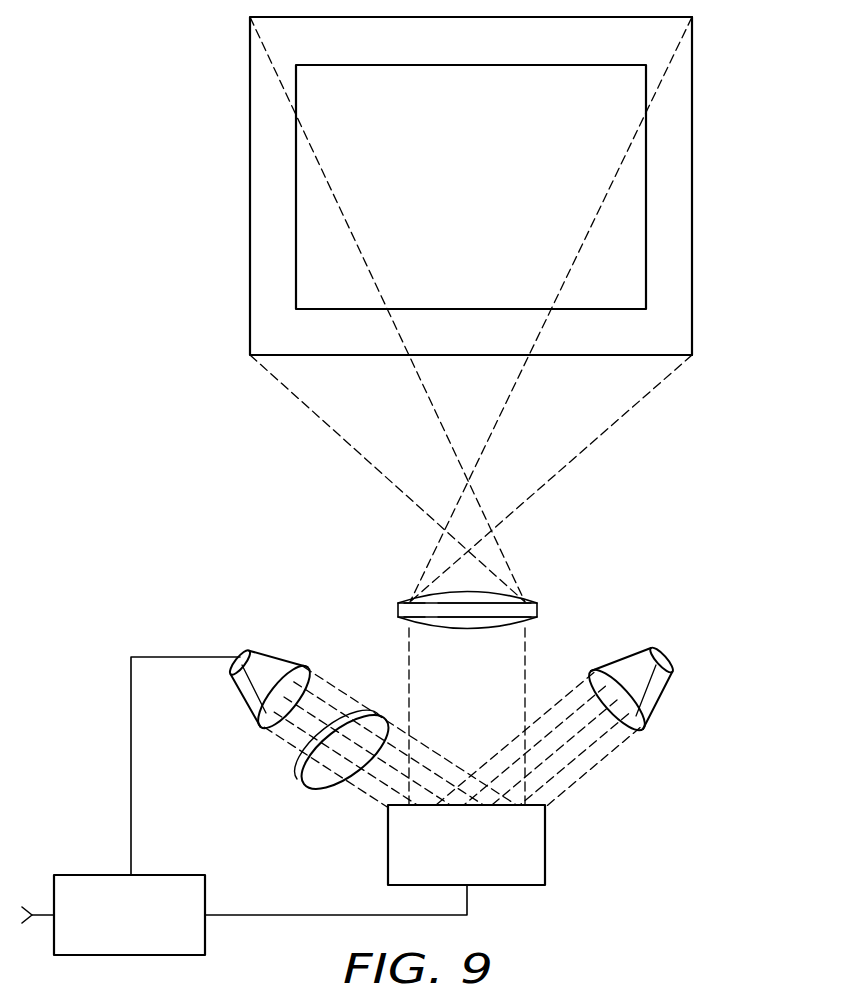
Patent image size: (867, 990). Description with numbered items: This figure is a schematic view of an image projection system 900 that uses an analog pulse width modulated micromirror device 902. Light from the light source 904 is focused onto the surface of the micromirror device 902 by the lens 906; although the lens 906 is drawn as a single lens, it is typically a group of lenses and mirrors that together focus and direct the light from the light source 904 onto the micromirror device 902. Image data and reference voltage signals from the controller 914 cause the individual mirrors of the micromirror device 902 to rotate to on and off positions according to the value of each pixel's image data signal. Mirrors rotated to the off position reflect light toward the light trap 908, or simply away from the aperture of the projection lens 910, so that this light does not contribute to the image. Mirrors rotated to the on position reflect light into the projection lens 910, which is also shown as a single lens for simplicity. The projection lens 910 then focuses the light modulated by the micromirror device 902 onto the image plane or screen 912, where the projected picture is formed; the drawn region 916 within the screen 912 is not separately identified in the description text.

The image projection system 900 is at (422, 486).
The micromirror device 902 is at (488, 860).
The light source 904 is at (277, 661).
The lens 906 is at (300, 786).
The light trap 908 is at (657, 663).
The projection lens 910 is at (538, 610).
The screen 912 is at (250, 180).
The controller 914 is at (692, 187).
The projected image 916 is at (494, 198).